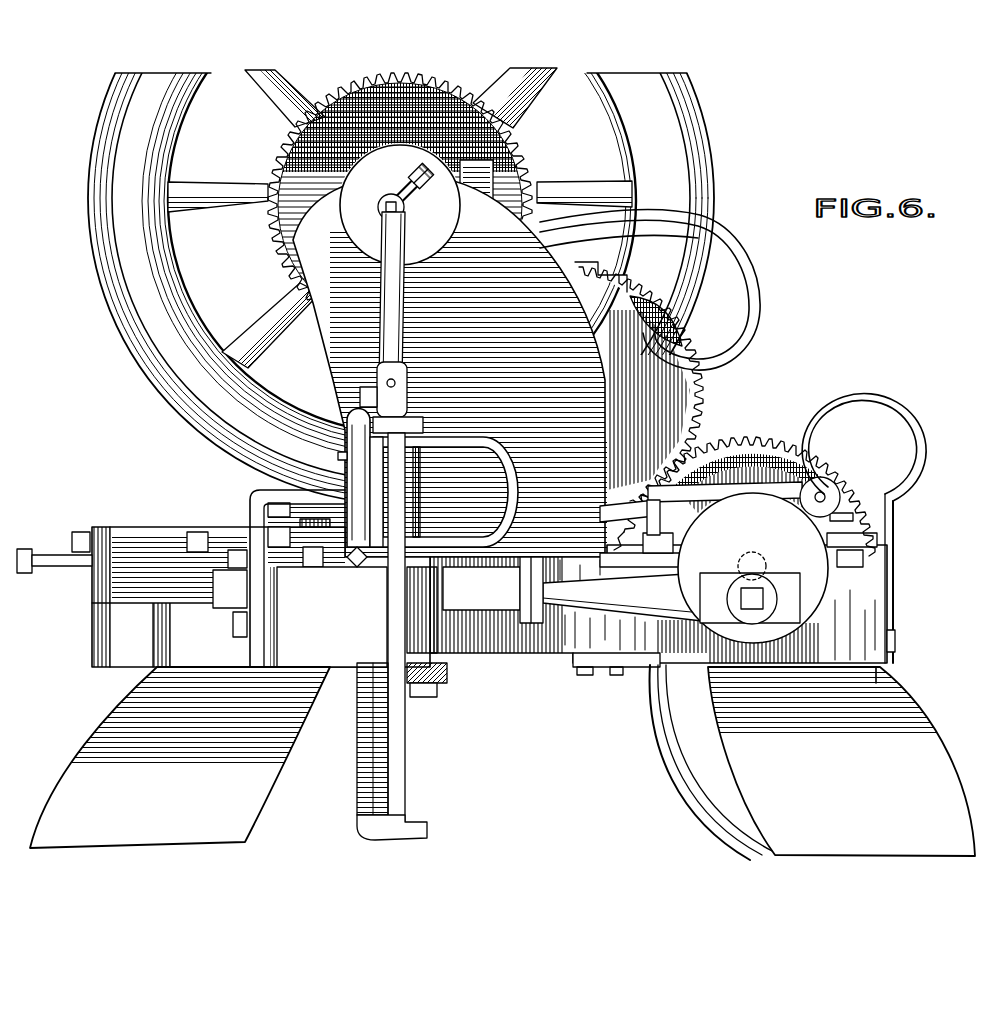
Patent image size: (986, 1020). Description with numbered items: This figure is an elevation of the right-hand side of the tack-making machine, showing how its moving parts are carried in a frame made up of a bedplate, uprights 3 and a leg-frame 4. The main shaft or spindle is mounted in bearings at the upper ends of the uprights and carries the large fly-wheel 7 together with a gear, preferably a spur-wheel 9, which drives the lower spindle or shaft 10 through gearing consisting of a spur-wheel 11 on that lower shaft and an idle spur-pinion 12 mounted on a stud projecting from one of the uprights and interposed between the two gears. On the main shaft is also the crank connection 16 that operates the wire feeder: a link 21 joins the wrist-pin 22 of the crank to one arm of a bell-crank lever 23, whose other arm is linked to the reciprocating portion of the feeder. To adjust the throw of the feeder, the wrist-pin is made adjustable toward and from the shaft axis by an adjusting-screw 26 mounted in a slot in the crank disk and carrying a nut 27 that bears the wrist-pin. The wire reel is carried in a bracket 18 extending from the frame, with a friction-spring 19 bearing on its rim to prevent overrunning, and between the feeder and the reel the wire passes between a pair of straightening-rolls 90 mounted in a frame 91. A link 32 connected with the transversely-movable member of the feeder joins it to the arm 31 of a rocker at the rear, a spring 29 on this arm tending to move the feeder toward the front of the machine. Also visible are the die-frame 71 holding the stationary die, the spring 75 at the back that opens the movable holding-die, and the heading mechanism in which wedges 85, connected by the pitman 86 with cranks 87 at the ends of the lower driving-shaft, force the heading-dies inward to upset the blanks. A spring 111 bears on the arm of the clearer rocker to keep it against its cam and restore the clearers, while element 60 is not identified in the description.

The uprights 3 is at (450, 366).
The leg-frame 4 is at (505, 762).
The fly-wheel 7 is at (113, 323).
The spur-wheel 9 is at (525, 152).
The lower spindle or shaft 10 is at (803, 528).
The spur-wheel 11 is at (768, 438).
The idle spur-pinion 12 is at (705, 382).
The crank connection 16 is at (381, 205).
The bracket 18 is at (447, 680).
The friction-spring 19 is at (240, 636).
The link 21 is at (424, 297).
The wrist-pin 22 is at (406, 218).
The bell-crank lever 23 is at (407, 385).
The adjusting-screw 26 is at (413, 181).
The nut 27 is at (405, 208).
The spring 29 is at (893, 528).
The arm 31 is at (847, 488).
The link 32 is at (563, 495).
The lever 60 is at (583, 250).
The die-frame 71 is at (227, 585).
The spring 75 is at (887, 573).
The wedges 85 is at (493, 590).
The pitman 86 is at (622, 597).
The cranks 87 is at (745, 575).
The straightening-rolls 90 is at (340, 458).
The frame 91 is at (360, 481).
The spring 111 is at (864, 447).